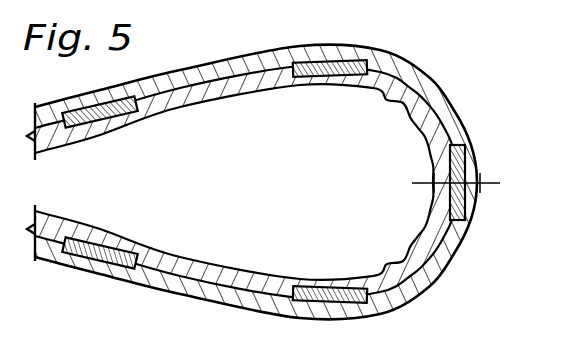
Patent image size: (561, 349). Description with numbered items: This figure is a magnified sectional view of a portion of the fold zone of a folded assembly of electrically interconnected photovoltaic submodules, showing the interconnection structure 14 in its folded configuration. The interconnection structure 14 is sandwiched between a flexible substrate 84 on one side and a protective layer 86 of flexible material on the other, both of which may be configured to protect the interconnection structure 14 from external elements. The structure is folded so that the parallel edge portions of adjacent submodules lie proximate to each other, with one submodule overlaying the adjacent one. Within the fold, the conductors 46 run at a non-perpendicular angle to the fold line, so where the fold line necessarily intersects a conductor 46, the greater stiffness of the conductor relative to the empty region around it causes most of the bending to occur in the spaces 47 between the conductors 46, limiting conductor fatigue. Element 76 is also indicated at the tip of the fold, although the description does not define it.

The interconnection structure 14 is at (501, 67).
The conductors 46 is at (333, 68).
The space between conductors 47 is at (407, 82).
The tip sensor 76 is at (470, 171).
The flexible substrate 84 is at (252, 65).
The protective layer 86 is at (272, 78).